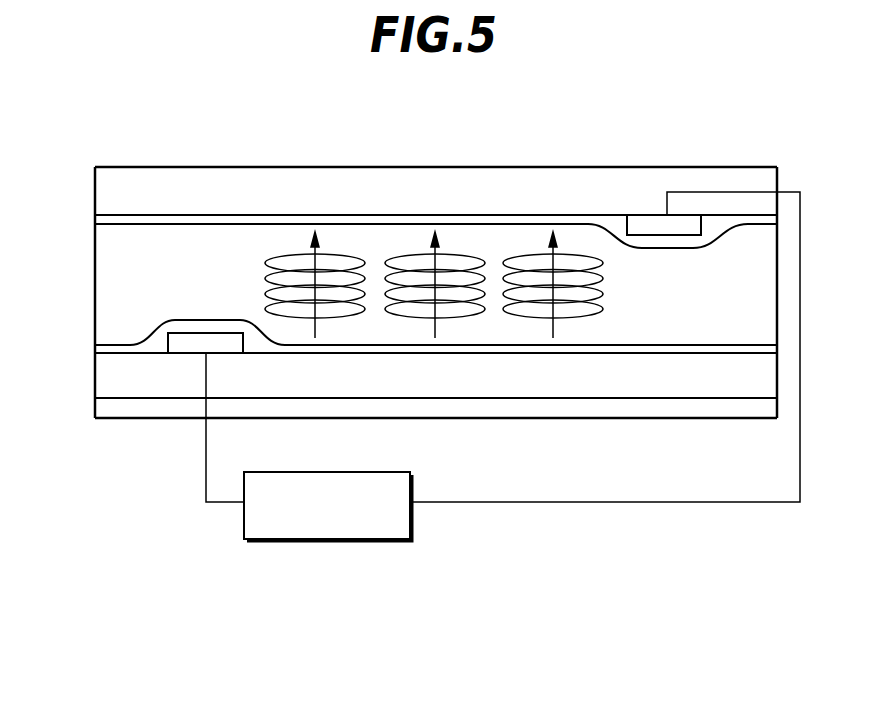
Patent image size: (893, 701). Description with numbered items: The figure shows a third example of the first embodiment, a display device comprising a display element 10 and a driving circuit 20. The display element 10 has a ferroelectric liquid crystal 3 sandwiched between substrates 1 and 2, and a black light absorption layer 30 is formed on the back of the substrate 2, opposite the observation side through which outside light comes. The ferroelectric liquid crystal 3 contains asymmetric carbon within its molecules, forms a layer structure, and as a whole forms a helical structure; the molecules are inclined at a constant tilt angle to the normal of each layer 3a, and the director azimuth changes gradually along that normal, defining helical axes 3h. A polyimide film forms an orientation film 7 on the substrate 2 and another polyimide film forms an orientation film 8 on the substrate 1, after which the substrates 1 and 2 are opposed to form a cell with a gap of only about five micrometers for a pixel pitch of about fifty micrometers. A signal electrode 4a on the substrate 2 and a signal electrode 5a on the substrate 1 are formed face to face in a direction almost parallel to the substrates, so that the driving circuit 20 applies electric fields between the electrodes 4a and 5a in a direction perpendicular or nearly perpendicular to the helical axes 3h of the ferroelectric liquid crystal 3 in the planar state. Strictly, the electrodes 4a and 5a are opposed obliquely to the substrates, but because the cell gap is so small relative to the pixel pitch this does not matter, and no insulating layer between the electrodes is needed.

The display element 10 is at (98, 61).
The substrate 1 is at (565, 178).
The substrate 2 is at (432, 380).
The ferroelectric liquid crystal 3 is at (370, 232).
The layer 3a is at (287, 256).
The helical axis 3h is at (435, 318).
The signal electrode 4a is at (205, 333).
The signal electrode 5a is at (654, 215).
The orientation film 7 is at (105, 349).
The orientation film 8 is at (498, 215).
The driving circuit 20 is at (327, 540).
The light absorption layer 30 is at (725, 408).